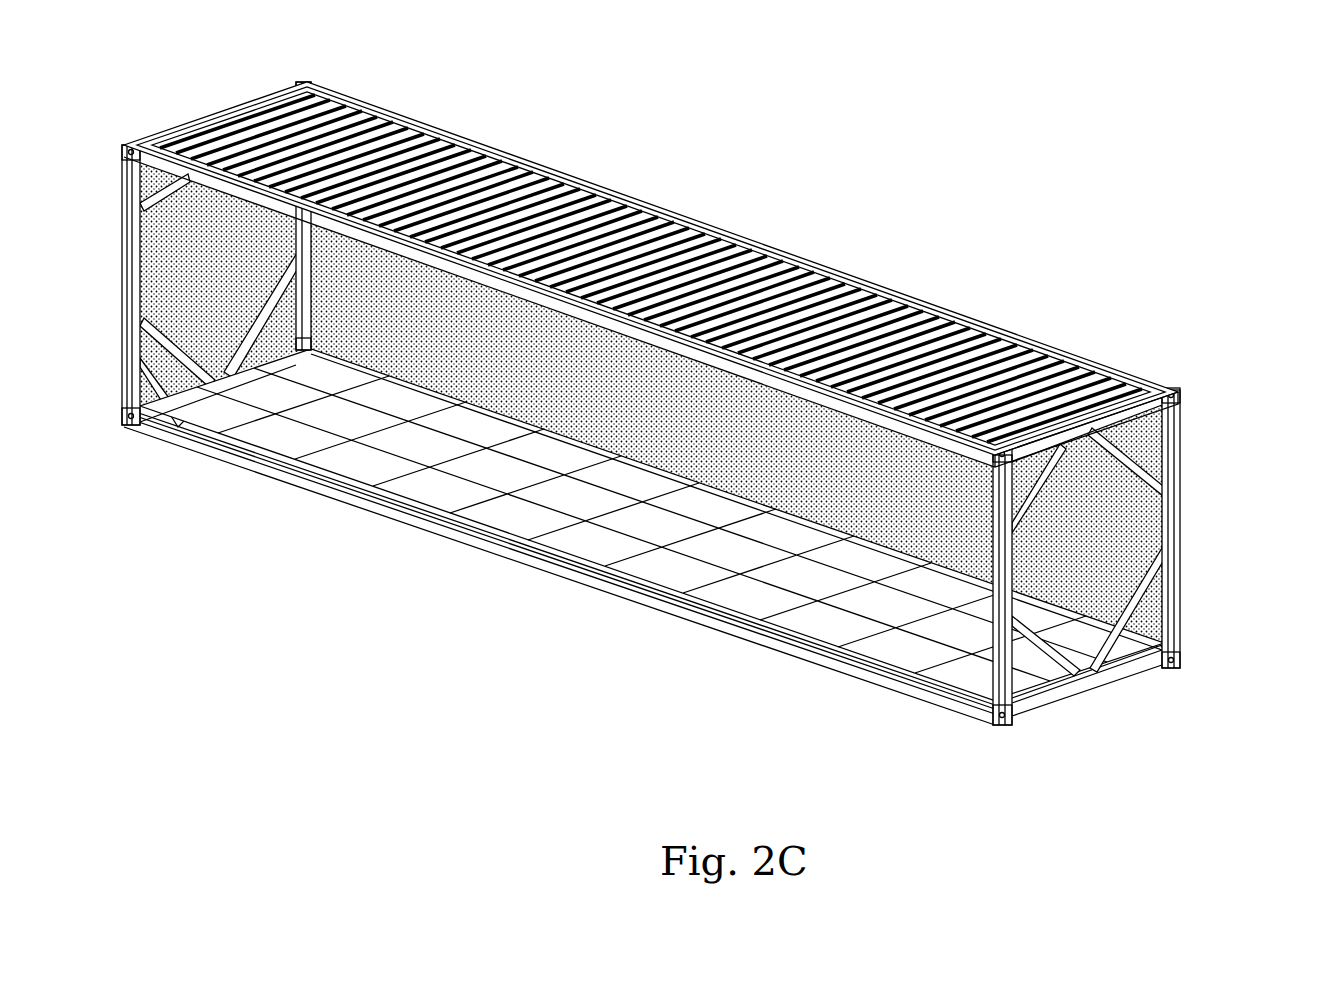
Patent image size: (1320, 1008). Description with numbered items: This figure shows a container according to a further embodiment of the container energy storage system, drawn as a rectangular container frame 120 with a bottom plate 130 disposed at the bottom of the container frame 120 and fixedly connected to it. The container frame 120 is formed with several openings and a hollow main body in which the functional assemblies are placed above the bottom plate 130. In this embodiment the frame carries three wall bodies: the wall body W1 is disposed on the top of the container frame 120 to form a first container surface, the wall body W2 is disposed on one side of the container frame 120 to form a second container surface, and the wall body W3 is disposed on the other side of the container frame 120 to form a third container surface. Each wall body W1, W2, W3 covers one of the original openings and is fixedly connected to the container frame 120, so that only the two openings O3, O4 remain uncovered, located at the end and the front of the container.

The wall body W1 is at (822, 278).
The wall body W2 is at (197, 117).
The wall body W3 is at (968, 312).
The container frame 120 is at (1098, 375).
The bottom plate 130 is at (925, 668).
The opening O3 is at (1160, 525).
The opening O4 is at (282, 458).